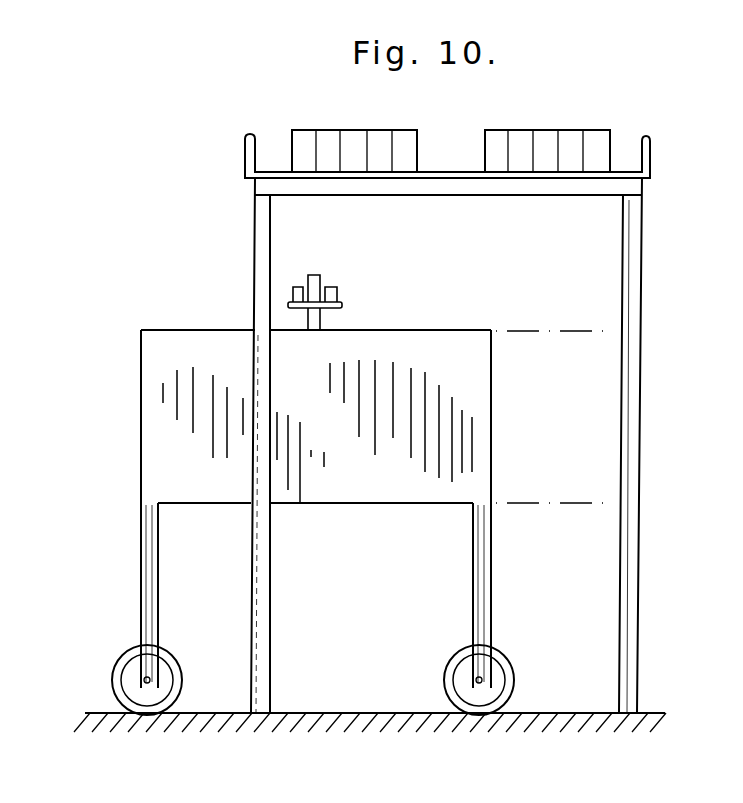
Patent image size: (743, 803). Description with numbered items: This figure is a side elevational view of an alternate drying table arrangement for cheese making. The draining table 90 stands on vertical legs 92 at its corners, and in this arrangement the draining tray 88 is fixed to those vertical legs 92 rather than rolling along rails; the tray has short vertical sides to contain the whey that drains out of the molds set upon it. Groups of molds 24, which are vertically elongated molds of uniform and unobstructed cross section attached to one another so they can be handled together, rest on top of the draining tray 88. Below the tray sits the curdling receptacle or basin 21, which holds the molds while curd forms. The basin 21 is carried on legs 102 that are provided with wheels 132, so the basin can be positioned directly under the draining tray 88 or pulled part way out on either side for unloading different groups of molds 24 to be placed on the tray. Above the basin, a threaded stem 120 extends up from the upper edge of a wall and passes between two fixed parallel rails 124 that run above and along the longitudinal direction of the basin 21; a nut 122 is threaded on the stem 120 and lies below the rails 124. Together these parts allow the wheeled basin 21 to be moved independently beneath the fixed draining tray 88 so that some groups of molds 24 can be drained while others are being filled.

The curdling receptacle 21 is at (142, 405).
The molds 24 is at (374, 137).
The draining tray 88 is at (648, 160).
The draining table 90 is at (236, 154).
The vertical legs 92 is at (256, 253).
The legs 102 is at (146, 573).
The threaded stem 120 is at (318, 275).
The nut 122 is at (343, 305).
The fixed parallel rails 124 is at (297, 287).
The wheels 132 is at (125, 657).